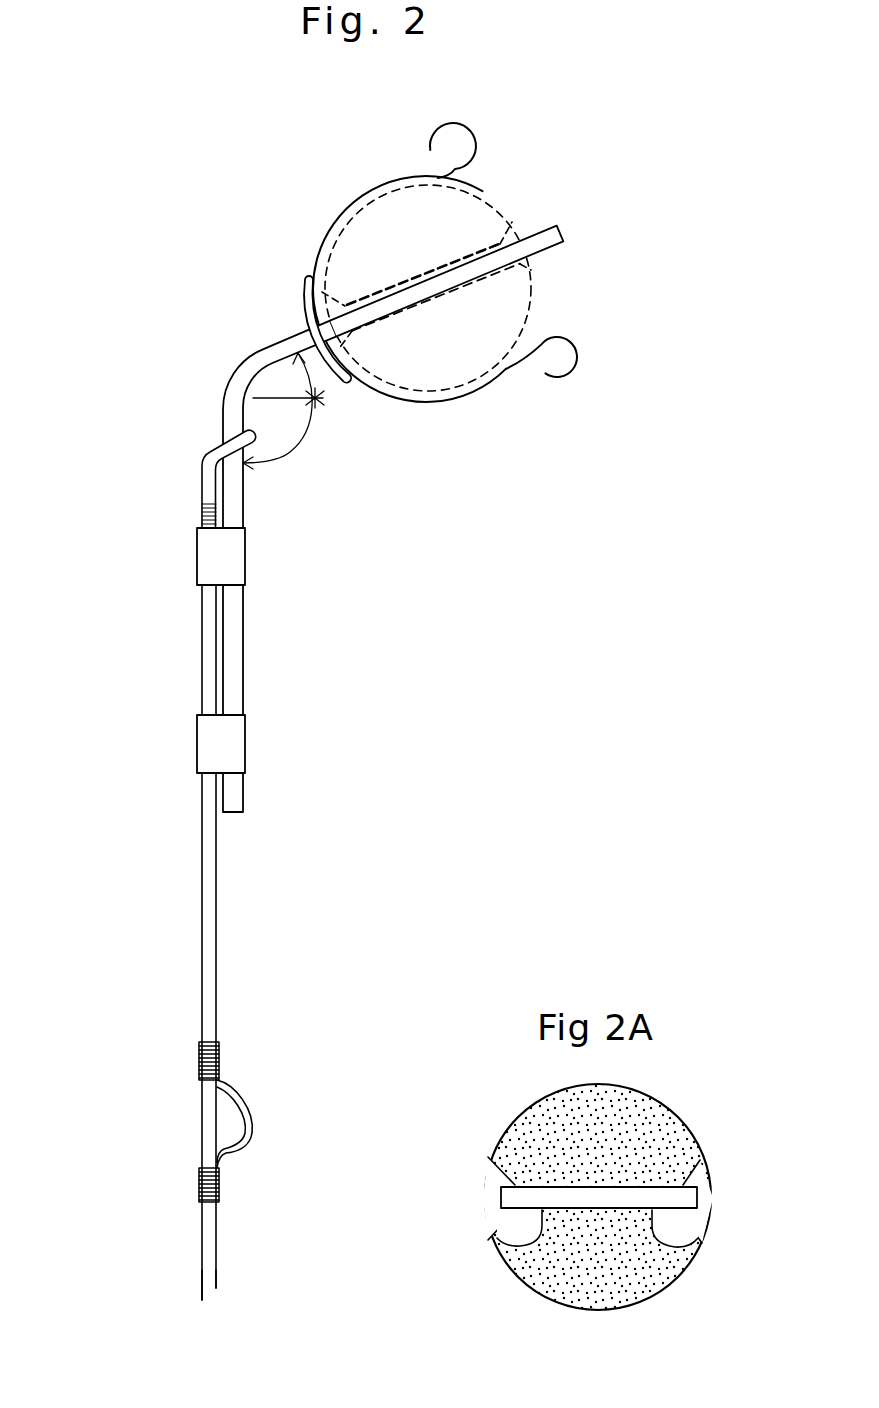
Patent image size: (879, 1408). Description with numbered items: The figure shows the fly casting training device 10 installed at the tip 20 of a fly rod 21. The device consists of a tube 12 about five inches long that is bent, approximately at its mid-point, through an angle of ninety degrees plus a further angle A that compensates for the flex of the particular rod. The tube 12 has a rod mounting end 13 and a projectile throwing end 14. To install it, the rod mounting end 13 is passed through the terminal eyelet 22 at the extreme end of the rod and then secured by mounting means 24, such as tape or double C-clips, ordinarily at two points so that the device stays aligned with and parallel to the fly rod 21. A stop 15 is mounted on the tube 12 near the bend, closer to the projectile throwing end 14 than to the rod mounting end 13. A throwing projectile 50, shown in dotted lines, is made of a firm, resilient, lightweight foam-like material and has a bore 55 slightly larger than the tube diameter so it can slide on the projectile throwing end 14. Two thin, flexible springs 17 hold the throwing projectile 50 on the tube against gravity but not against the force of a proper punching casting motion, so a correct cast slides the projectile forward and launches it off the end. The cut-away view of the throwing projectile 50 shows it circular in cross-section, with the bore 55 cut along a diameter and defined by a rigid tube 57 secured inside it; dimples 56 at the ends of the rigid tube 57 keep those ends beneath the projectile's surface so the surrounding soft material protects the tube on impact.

In FIG. 2, the fly casting training device 10 is at (200, 348).
In FIG. 2, the tube 12 is at (285, 338).
In FIG. 2, the rod mounting end 13 is at (247, 793).
In FIG. 2, the projectile throwing end 14 is at (562, 224).
In FIG. 2, the stop 15 is at (303, 287).
In FIG. 2, the springs 17 is at (427, 140).
In FIG. 2, the tip of fly rod 20 is at (223, 953).
In FIG. 2, the fly rod 21 is at (198, 1247).
In FIG. 2, the terminal eyelet 22 is at (207, 460).
In FIG. 2, the mounting means 24 is at (247, 557).
In FIG. 2, the throwing projectile 50 is at (484, 194).
In FIG. 2A, the throwing projectile 50 is at (523, 1102).
In FIG. 2, the bore 55 is at (485, 278).
In FIG. 2A, the bore 55 is at (503, 1243).
In FIG. 2A, the dimples 56 is at (493, 1182).
In FIG. 2A, the rigid tube 57 is at (501, 1197).